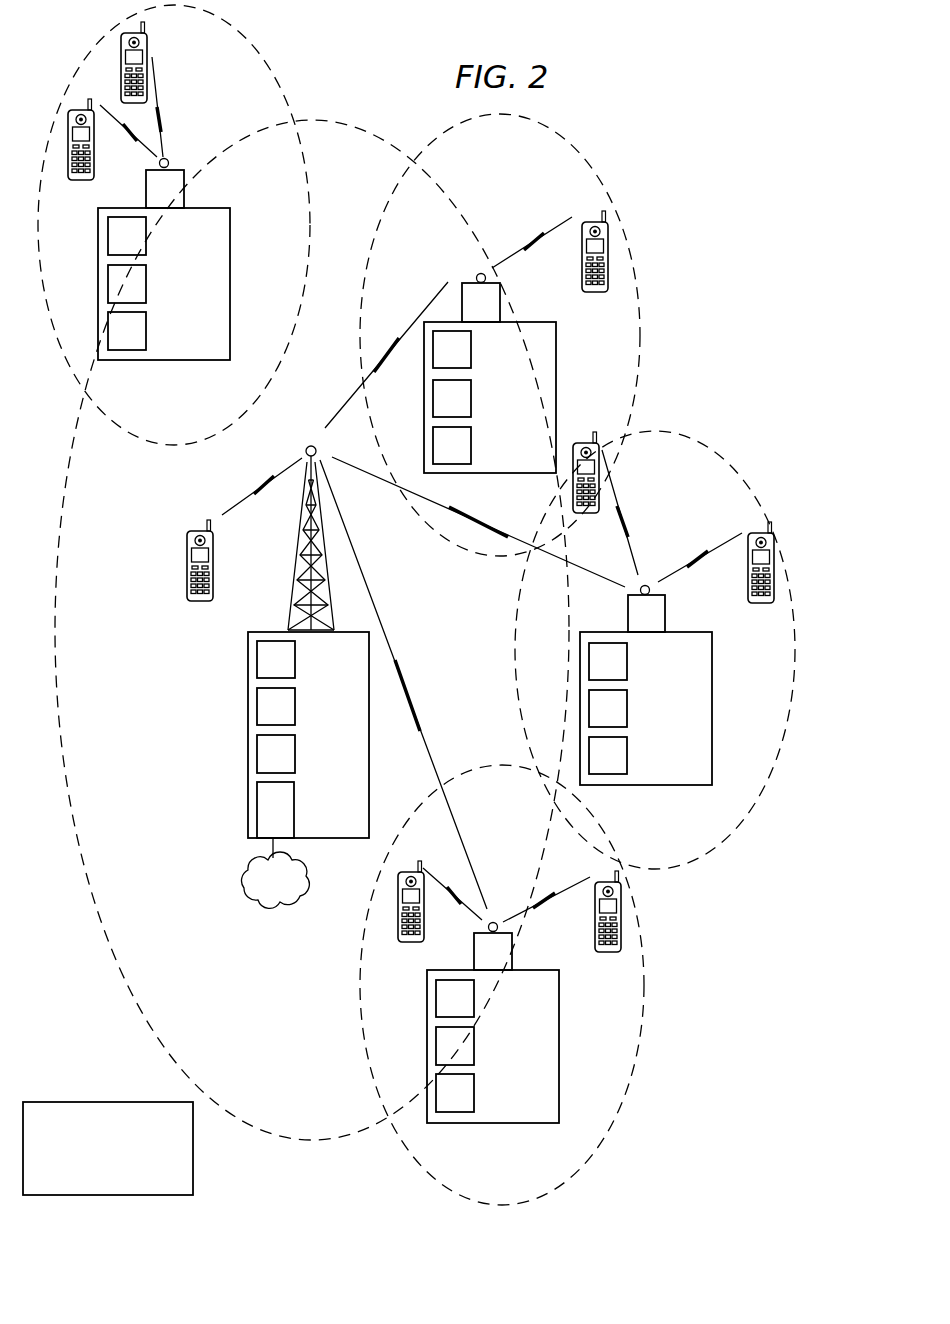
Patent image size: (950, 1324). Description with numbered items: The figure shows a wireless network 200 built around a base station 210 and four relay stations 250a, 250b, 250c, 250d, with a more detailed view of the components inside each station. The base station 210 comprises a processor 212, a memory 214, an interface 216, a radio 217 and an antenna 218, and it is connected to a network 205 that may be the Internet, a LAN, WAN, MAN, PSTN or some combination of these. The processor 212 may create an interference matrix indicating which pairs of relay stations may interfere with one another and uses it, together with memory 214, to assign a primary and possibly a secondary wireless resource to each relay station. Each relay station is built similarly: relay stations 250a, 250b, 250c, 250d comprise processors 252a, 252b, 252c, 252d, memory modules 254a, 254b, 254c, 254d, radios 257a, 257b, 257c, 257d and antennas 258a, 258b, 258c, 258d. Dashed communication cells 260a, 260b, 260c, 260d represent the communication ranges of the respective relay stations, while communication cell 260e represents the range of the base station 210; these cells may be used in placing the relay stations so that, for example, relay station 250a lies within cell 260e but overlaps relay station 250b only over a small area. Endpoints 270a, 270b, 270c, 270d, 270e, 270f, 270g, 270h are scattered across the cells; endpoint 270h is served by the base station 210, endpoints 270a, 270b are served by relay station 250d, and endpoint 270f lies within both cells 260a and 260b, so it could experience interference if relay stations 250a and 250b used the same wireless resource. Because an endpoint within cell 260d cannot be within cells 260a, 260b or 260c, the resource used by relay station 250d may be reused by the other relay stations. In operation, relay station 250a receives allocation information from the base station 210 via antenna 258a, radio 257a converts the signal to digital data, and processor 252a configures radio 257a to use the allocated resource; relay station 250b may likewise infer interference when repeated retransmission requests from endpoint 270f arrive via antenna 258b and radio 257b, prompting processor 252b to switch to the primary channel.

The wireless network 200 is at (706, 176).
The network 205 is at (238, 885).
The base station 210 is at (273, 642).
The processor 212 is at (295, 660).
The memory 214 is at (295, 707).
The interface 216 is at (294, 808).
The radio 217 is at (295, 754).
The antenna 218 is at (298, 570).
The relay station 250a is at (529, 374).
The relay station 250b is at (657, 714).
The relay station 250c is at (503, 1050).
The relay station 250d is at (164, 271).
The processor 252a is at (471, 350).
The processor 252b is at (627, 662).
The processor 252c is at (474, 999).
The processor 252d is at (146, 236).
The memory module 254a is at (471, 399).
The memory module 254b is at (627, 709).
The memory module 254c is at (474, 1047).
The memory module 254d is at (146, 284).
The radio 257a is at (471, 446).
The radio 257b is at (643, 757).
The radio 257c is at (489, 1094).
The radio 257d is at (162, 331).
The antenna 258a is at (500, 308).
The antenna 258b is at (665, 620).
The antenna 258c is at (512, 958).
The antenna 258d is at (182, 176).
The communication cell 260a is at (582, 151).
The communication cell 260b is at (738, 462).
The communication cell 260c is at (583, 1170).
The communication cell 260d is at (122, 436).
The communication cell 260e is at (326, 1142).
The endpoint 270a is at (80, 180).
The endpoint 270b is at (121, 50).
The endpoint 270c is at (409, 942).
The endpoint 270d is at (606, 952).
The endpoint 270e is at (760, 603).
The endpoint 270f is at (585, 513).
The endpoint 270g is at (594, 292).
The endpoint 270h is at (198, 601).